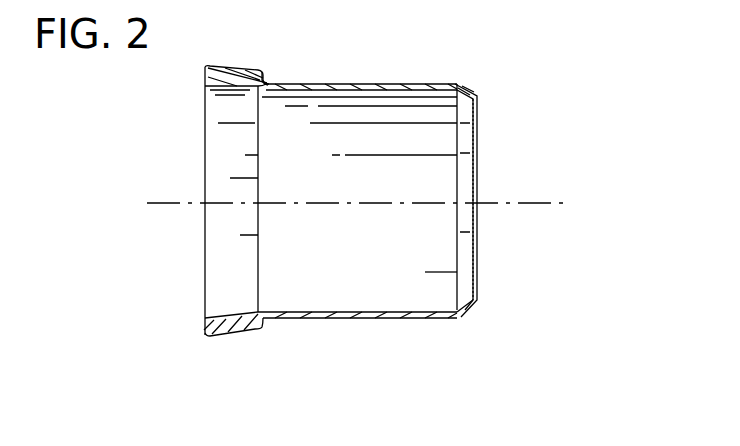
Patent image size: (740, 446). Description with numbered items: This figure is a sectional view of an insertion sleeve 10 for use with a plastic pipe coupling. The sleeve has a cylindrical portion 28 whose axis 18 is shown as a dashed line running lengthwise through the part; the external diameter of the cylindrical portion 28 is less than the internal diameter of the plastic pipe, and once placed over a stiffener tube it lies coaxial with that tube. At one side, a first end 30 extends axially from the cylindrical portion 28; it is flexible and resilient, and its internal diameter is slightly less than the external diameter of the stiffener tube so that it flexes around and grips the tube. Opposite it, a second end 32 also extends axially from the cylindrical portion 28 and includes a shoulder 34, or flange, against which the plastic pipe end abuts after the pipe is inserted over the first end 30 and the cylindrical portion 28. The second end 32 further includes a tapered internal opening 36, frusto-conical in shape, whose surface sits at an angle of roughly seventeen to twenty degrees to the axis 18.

The insertion sleeve 10 is at (537, 122).
The axis 18 is at (507, 207).
The cylindrical portion 28 is at (366, 82).
The first end 30 is at (475, 96).
The second end 32 is at (223, 67).
The shoulder 34 is at (267, 80).
The tapered internal opening 36 is at (237, 88).